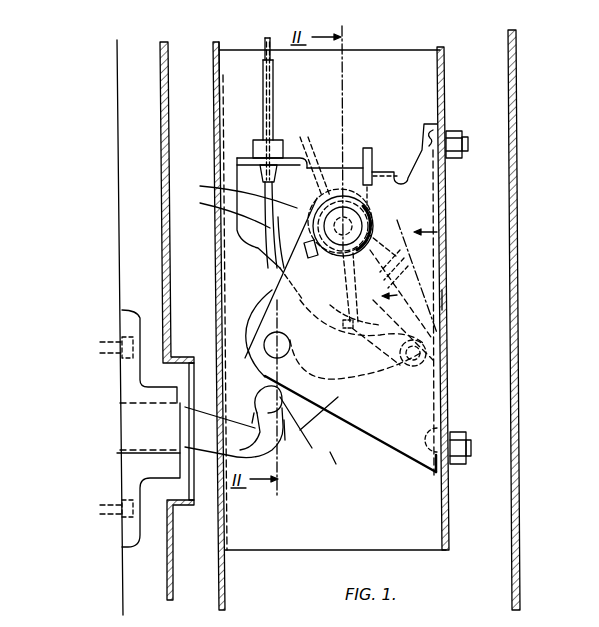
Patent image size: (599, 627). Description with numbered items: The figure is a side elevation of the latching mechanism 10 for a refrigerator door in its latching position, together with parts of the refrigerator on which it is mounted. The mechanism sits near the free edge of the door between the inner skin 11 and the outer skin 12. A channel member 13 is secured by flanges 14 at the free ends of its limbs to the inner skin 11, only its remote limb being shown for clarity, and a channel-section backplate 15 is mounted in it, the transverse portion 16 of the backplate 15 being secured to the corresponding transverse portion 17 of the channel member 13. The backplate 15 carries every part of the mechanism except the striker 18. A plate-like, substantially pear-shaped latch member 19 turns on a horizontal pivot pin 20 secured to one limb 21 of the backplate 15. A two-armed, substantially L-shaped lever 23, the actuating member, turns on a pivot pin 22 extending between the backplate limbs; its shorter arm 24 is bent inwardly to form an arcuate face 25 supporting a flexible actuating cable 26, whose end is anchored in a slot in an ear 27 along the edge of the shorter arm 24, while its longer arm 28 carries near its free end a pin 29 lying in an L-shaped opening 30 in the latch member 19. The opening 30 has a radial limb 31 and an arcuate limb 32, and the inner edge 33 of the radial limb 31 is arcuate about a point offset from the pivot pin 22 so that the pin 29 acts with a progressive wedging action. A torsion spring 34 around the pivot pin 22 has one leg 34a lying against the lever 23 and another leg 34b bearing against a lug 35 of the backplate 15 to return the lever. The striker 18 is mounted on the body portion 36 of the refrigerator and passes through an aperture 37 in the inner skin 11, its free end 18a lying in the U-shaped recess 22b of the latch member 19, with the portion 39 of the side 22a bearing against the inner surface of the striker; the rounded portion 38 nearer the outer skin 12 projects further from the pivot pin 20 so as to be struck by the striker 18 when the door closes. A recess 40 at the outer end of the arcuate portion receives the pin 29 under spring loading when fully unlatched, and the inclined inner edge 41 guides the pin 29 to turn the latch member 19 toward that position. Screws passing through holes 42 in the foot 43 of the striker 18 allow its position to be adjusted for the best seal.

The latching mechanism 10 is at (330, 452).
The inner skin 11 is at (213, 50).
The outer skin 12 is at (516, 92).
The channel member 13 is at (377, 58).
The flanges 14 is at (223, 76).
The backplate 15 is at (437, 232).
The transverse portion 16 is at (446, 185).
The transverse portion 17 is at (442, 209).
The striker 18 is at (238, 436).
The free end 18a is at (325, 409).
The latch member 19 is at (336, 420).
The pivot pin 20 is at (265, 338).
The limb 21 is at (262, 347).
The pivot pin 22 is at (313, 153).
The side 22a is at (278, 410).
The U-shaped recess 22b is at (286, 440).
The lever 23 is at (409, 276).
The shorter arm 24 is at (297, 210).
The arcuate face 25 is at (222, 211).
The actuating cable 26 is at (236, 191).
The ear 27 is at (278, 268).
The longer arm 28 is at (445, 299).
The pin 29 is at (444, 327).
The opening 30 is at (396, 398).
The radial limb 31 is at (398, 368).
The arcuate limb 32 is at (274, 293).
The inner edge 33 is at (357, 334).
The torsion spring 34 is at (304, 150).
The leg 34a is at (400, 269).
The leg 34b is at (366, 148).
The lug 35 is at (389, 172).
The body portion 36 is at (161, 247).
The aperture 37 is at (216, 118).
The portion 38 is at (301, 430).
The portion 39 is at (252, 415).
The recess 40 is at (328, 318).
The inner edge 41 is at (316, 373).
The holes 42 is at (104, 426).
The foot 43 is at (123, 381).